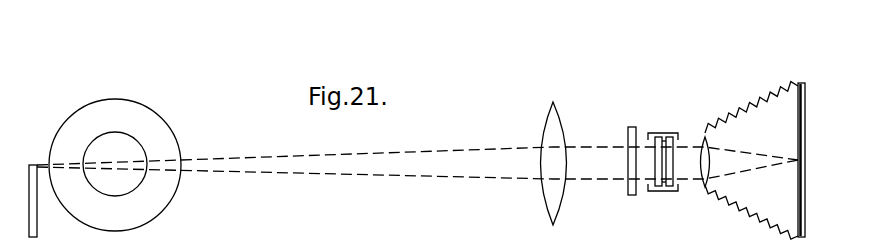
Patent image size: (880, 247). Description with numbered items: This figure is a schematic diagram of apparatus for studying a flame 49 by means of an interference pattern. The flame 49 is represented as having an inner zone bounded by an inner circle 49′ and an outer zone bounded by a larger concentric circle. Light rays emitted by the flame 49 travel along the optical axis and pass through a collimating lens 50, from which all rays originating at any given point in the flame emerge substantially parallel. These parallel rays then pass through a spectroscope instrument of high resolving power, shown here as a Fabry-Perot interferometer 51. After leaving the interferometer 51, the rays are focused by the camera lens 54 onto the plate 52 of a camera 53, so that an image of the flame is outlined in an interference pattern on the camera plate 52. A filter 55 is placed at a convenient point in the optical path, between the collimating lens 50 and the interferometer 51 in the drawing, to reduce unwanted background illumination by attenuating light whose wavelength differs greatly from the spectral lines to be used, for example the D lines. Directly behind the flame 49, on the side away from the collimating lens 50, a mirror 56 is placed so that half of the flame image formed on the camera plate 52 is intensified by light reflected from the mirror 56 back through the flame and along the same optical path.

The flame 49 is at (124, 90).
The circle bounding inner zone 49′ is at (147, 142).
The collimating lens 50 is at (547, 122).
The Fabry-Perot interferometer 51 is at (662, 133).
The plate 52 is at (798, 132).
The camera 53 is at (760, 96).
The camera lens 54 is at (700, 148).
The filter 55 is at (632, 127).
The mirror 56 is at (37, 223).